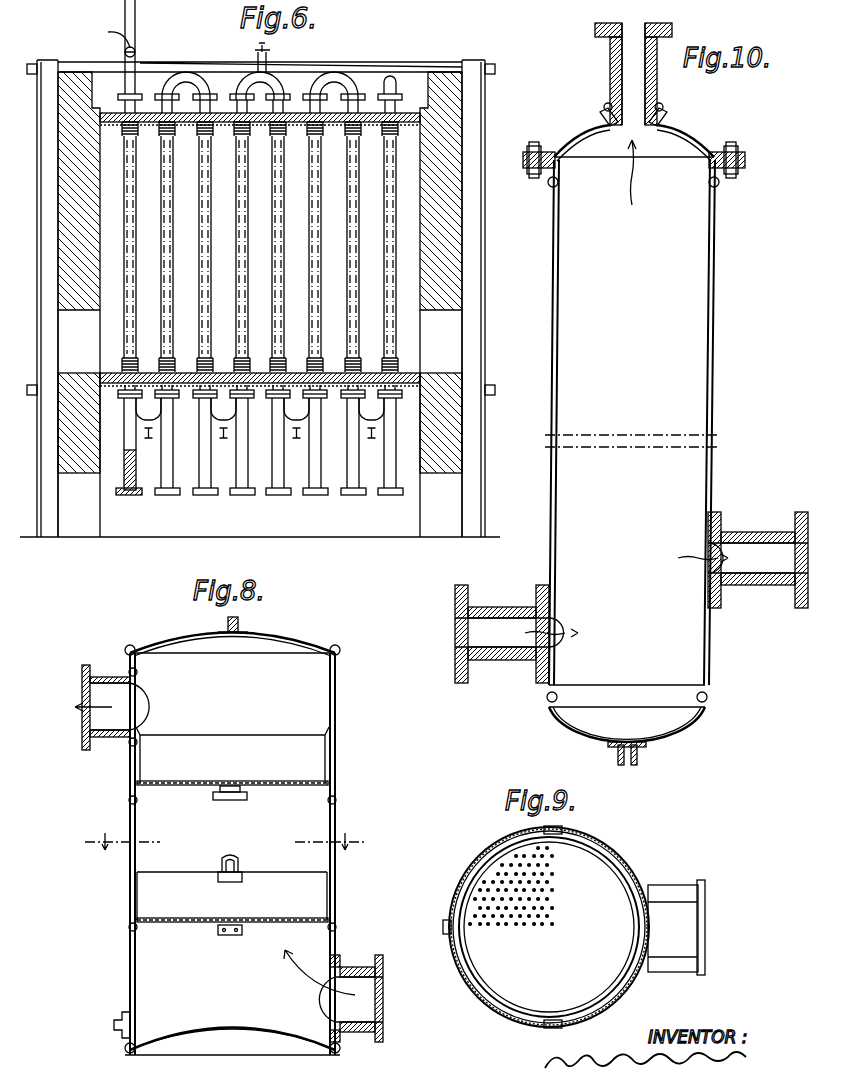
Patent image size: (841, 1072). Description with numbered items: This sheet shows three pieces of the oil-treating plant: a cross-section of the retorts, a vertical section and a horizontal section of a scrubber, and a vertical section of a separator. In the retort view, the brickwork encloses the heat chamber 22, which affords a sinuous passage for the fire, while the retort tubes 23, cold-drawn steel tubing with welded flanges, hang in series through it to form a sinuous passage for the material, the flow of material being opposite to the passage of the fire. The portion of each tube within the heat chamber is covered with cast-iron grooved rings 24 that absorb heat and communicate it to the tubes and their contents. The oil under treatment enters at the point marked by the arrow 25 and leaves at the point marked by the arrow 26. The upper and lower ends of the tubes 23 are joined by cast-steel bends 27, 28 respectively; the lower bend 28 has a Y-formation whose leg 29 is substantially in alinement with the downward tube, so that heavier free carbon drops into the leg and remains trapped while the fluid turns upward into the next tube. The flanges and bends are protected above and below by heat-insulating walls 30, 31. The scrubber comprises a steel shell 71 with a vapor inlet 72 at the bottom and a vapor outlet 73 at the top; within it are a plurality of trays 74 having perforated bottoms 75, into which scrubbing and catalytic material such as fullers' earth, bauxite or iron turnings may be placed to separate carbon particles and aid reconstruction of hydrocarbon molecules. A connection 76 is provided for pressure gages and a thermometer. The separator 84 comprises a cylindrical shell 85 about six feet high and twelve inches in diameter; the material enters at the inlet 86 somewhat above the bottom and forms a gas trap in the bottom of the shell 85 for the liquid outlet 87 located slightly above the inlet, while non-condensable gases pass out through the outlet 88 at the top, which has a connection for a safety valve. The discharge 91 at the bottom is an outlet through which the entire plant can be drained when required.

In FIG. 6, the heat chamber 22 is at (447, 252).
In FIG. 6, the retort tube 23 is at (350, 166).
In FIG. 6, the cast-iron grooved ring 24 is at (316, 135).
In FIG. 6, the point of entrance arrow 25 is at (128, 70).
In FIG. 6, the point of exit arrow 26 is at (134, 10).
In FIG. 6, the upper bend 27 is at (250, 78).
In FIG. 6, the lower bend 28 is at (229, 417).
In FIG. 6, the leg of the Y 29 is at (204, 462).
In FIG. 6, the upper heat-insulating wall 30 is at (290, 118).
In FIG. 6, the lower heat-insulating wall 31 is at (405, 375).
In FIG. 8, the steel shell 71 is at (335, 800).
In FIG. 9, the steel shell 71 is at (483, 1010).
In FIG. 8, the vapor inlet 72 is at (351, 998).
In FIG. 9, the vapor inlet 72 is at (675, 940).
In FIG. 8, the vapor outlet 73 is at (88, 687).
In FIG. 8, the tray 74 is at (232, 823).
In FIG. 9, the tray 74 is at (643, 897).
In FIG. 8, the perforated bottom 75 is at (273, 785).
In FIG. 9, the perforated bottom 75 is at (532, 928).
In FIG. 8, the connection 76 is at (233, 614).
In FIG. 10, the separator 84 is at (634, 422).
In FIG. 10, the cylindrical shell 85 is at (711, 342).
In FIG. 10, the inlet 86 is at (500, 628).
In FIG. 10, the liquid outlet 87 is at (748, 557).
In FIG. 10, the outlet 88 is at (627, 85).
In FIG. 10, the discharge 91 is at (628, 760).